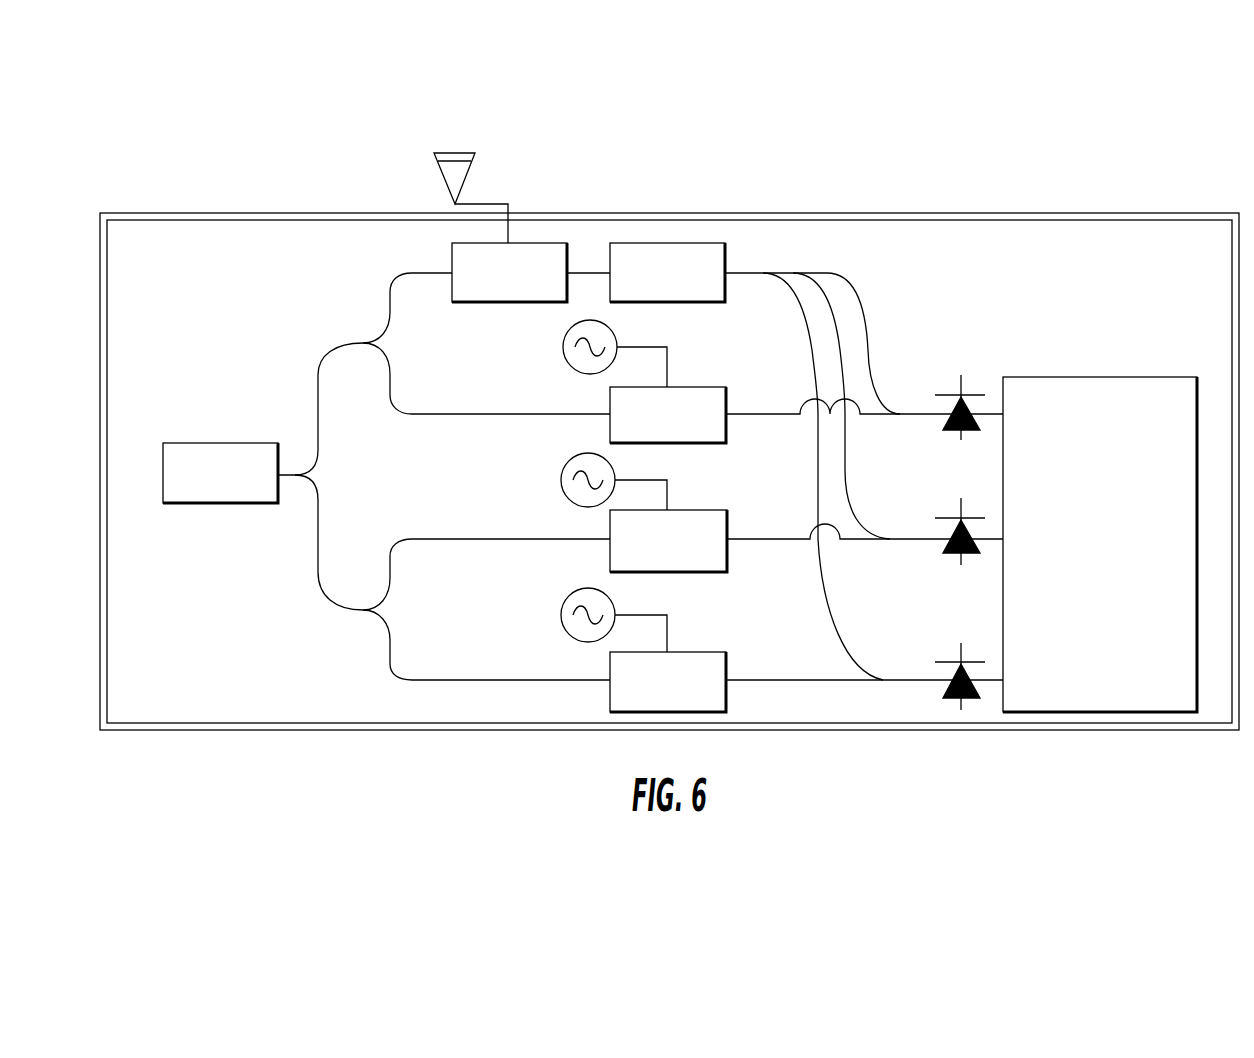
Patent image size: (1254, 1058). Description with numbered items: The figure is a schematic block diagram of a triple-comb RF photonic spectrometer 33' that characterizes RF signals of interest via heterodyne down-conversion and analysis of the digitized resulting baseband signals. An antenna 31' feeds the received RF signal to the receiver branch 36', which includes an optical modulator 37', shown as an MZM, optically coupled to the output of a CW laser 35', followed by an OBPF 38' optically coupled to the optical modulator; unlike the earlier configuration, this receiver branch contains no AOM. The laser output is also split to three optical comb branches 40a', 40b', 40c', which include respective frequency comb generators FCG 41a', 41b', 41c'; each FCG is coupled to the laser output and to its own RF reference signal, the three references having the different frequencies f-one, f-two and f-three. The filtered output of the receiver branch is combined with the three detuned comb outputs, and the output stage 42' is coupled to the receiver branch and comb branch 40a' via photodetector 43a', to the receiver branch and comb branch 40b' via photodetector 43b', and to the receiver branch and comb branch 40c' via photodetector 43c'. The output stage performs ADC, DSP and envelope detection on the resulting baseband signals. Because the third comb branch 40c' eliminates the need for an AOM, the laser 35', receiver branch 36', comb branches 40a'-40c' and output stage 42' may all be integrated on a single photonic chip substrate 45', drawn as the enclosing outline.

The RF photonic spectrometer 33' is at (676, 388).
The antenna 31' is at (450, 178).
The laser 35' is at (263, 476).
The receiver branch 36' is at (343, 303).
The optical modulator 37' is at (531, 230).
The OBPF 38' is at (755, 419).
The optical comb branch 40a' is at (486, 376).
The optical comb branch 40b' is at (482, 542).
The third optical comb branch 40c' is at (486, 645).
The FCG 41a' is at (764, 381).
The FCG 41b' is at (764, 512).
The FCG 41c' is at (764, 650).
The output stage 42' is at (1100, 521).
The photodetector 43a' is at (950, 380).
The photodetector 43b' is at (938, 514).
The photodetector 43c' is at (938, 659).
The photonic chip substrate 45' is at (669, 445).